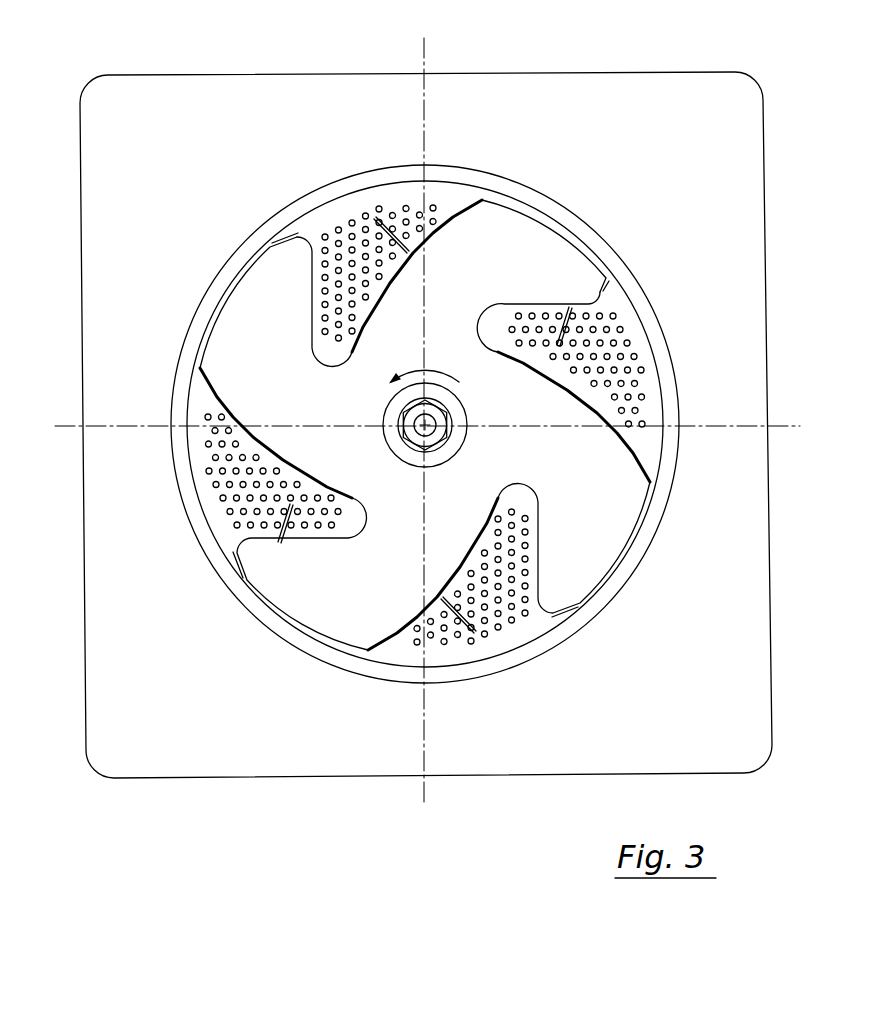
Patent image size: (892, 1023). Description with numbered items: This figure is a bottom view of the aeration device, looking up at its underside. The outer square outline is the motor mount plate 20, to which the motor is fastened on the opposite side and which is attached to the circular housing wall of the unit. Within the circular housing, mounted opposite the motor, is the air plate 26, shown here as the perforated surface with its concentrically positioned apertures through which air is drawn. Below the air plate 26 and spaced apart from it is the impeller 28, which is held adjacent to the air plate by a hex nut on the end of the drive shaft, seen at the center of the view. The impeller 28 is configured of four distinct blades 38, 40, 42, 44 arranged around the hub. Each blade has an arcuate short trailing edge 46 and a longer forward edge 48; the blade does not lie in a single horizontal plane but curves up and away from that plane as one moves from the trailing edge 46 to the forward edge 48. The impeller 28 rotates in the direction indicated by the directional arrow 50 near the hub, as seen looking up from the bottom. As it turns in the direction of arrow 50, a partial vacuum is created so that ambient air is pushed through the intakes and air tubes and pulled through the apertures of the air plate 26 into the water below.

The motor mount plate 20 is at (182, 75).
The air plate 26 is at (627, 350).
The impeller 28 is at (278, 283).
The blade 38 is at (509, 566).
The blade 40 is at (284, 509).
The blade 42 is at (300, 301).
The blade 44 is at (563, 361).
The trailing edge 46 is at (603, 280).
The forward edge 48 is at (483, 208).
The directional arrow 50 is at (425, 399).